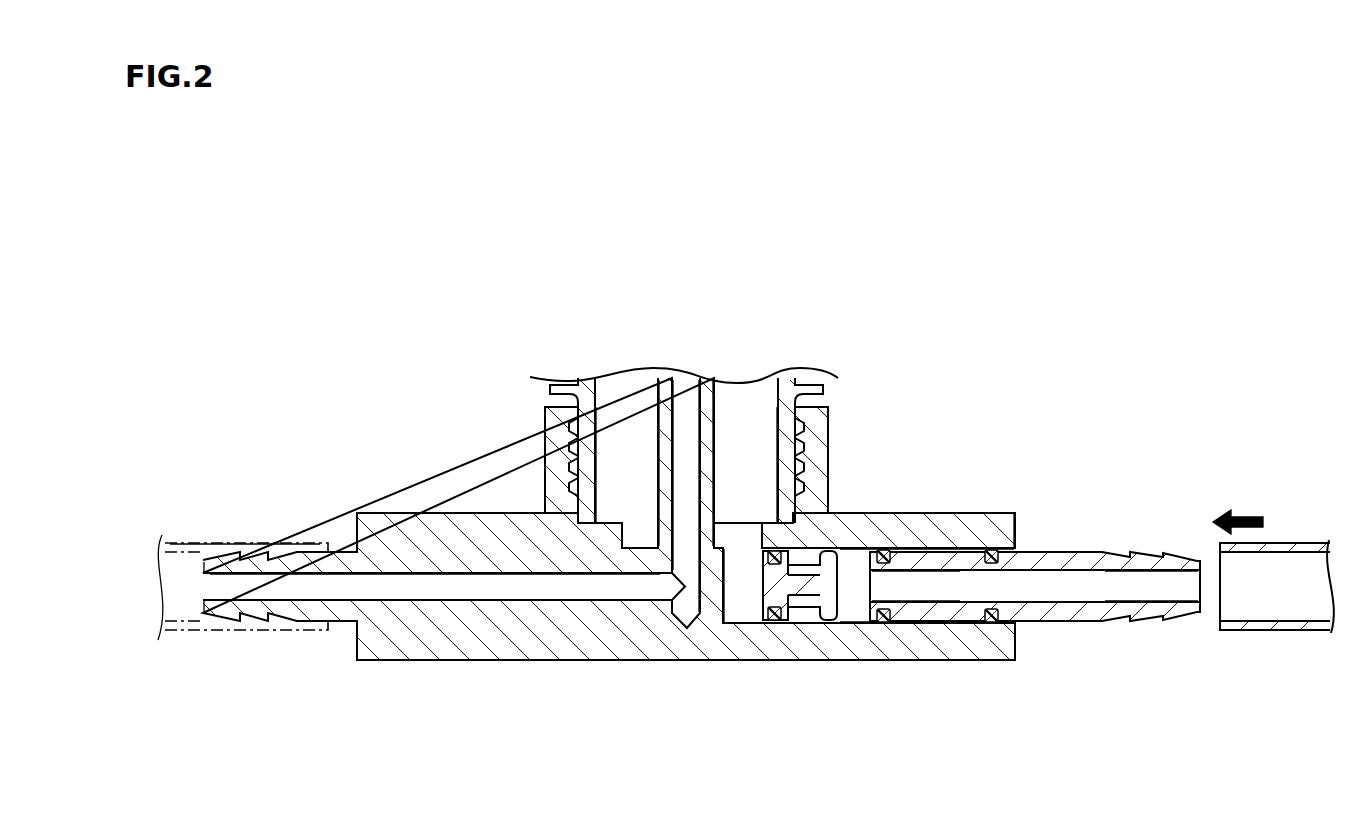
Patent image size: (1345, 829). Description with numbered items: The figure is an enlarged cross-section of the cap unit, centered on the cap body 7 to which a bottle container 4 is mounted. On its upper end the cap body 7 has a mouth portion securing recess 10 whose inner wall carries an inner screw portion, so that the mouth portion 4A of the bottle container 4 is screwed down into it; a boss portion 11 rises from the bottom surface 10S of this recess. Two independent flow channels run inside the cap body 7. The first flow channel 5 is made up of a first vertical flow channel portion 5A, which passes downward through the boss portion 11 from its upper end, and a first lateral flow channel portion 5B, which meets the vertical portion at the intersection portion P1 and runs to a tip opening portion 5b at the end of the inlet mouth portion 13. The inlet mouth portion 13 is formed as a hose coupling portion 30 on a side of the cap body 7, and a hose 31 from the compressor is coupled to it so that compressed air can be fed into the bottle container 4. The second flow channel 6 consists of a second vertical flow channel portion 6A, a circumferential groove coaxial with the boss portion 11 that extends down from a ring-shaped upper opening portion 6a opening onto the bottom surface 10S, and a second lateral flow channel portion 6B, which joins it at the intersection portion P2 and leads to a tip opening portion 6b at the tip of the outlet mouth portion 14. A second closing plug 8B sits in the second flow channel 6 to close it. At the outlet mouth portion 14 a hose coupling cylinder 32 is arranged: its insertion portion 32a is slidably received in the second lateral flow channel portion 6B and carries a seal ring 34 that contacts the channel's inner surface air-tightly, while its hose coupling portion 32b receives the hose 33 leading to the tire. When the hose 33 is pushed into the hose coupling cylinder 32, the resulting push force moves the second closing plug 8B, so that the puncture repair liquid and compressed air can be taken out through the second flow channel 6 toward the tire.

The cap body 7 is at (906, 439).
The outlet mouth portion 14 is at (971, 479).
The mouth portion 4A is at (672, 463).
The bottle container 4 is at (778, 423).
The mouth portion securing recess 10 is at (621, 411).
The bottom surface 10S is at (610, 520).
The boss portion 11 is at (657, 418).
The upper opening portion 6a is at (738, 523).
The tip opening portion 6b is at (1022, 525).
The first flow channel 5 is at (692, 764).
The first vertical flow channel portion 5A is at (673, 535).
The first lateral flow channel portion 5B is at (572, 595).
The tip opening portion 5b is at (202, 588).
The second flow channel 6 is at (738, 764).
The second vertical flow channel portion 6A is at (762, 552).
The second lateral flow channel portion 6B is at (838, 623).
The second closing plug 8B is at (803, 616).
The hose coupling cylinder 32 is at (982, 535).
The insertion portion 32a is at (925, 610).
The hose coupling portion 32b is at (1148, 607).
The seal ring 34 is at (995, 614).
The hose 33 is at (1294, 543).
The inlet mouth portion 13 is at (257, 514).
The hose coupling portion 30 is at (257, 587).
The hose 31 is at (188, 543).
The intersection portion P1 is at (664, 594).
The intersection portion P2 is at (739, 566).